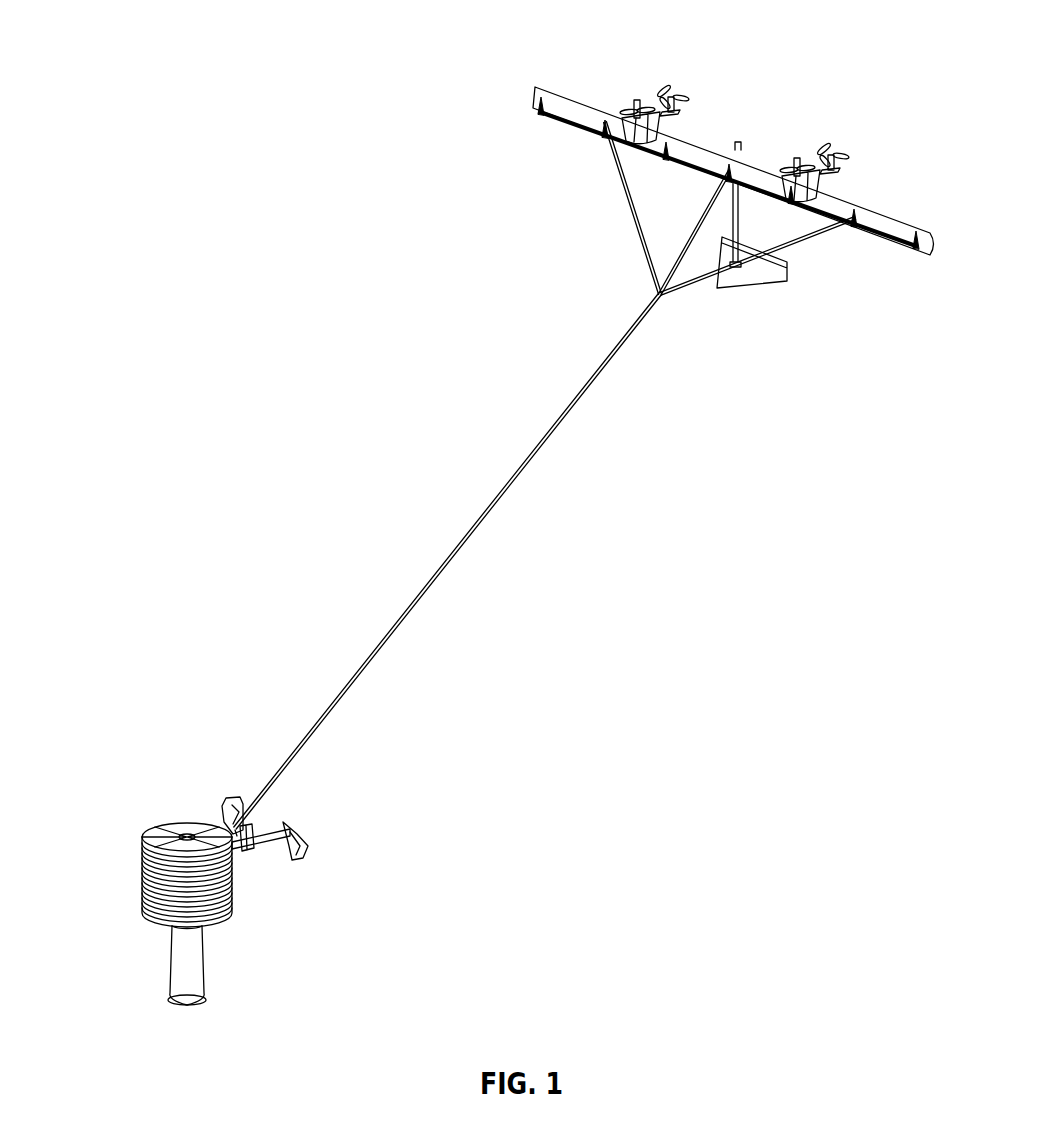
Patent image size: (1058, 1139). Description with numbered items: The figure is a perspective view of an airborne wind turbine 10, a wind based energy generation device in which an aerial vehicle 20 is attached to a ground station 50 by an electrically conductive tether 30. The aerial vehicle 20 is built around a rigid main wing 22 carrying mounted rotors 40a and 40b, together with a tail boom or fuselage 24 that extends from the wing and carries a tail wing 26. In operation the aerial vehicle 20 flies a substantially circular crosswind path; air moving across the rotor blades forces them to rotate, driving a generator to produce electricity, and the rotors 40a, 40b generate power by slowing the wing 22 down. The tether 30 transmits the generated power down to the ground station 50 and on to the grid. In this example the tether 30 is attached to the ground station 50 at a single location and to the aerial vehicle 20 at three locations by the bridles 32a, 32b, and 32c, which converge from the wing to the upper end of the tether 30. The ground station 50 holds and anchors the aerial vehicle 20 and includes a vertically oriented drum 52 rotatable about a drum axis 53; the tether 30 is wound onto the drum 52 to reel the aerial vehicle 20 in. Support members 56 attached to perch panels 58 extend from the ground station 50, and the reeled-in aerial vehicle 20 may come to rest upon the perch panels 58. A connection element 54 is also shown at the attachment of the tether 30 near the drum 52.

The airborne wind turbine 10 is at (318, 113).
The aerial vehicle 20 is at (756, 158).
The main wing 22 is at (880, 218).
The tail boom 24 is at (735, 212).
The tail wing 26 is at (735, 283).
The electrically conductive tether 30 is at (587, 387).
The bridle 32a is at (618, 178).
The bridle 32b is at (688, 241).
The bridle 32c is at (818, 234).
The rotor 40a is at (633, 108).
The rotor 40b is at (672, 94).
The ground station 50 is at (100, 805).
The drum 52 is at (221, 903).
The drum axis 53 is at (187, 837).
The tether attachment 54 is at (250, 833).
The support member 56 is at (258, 850).
The perch panel 58 is at (229, 802).